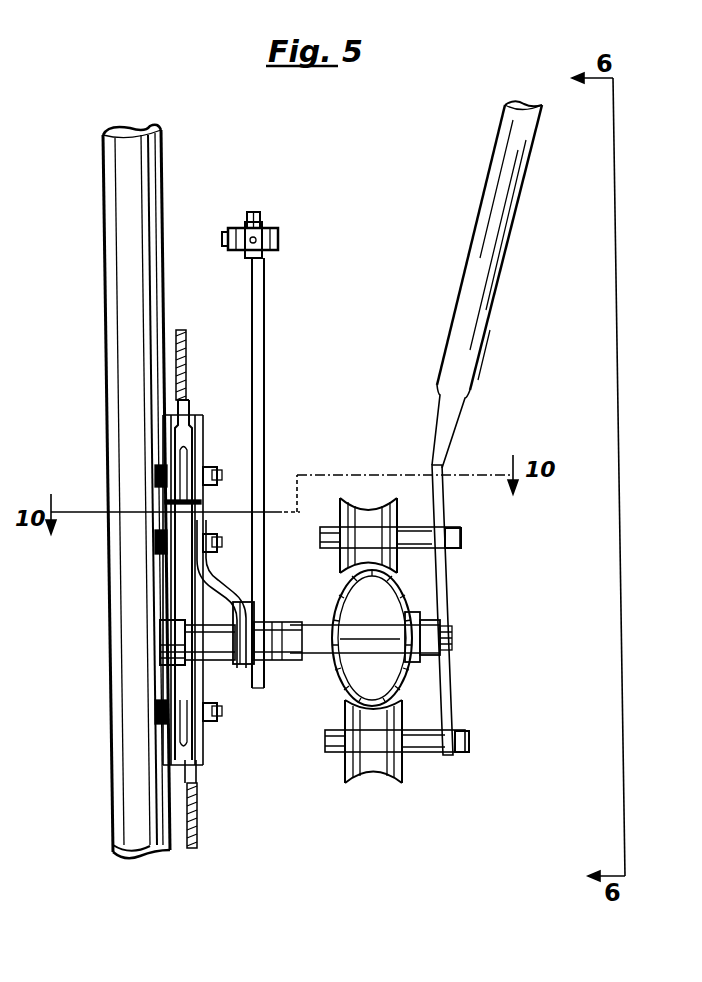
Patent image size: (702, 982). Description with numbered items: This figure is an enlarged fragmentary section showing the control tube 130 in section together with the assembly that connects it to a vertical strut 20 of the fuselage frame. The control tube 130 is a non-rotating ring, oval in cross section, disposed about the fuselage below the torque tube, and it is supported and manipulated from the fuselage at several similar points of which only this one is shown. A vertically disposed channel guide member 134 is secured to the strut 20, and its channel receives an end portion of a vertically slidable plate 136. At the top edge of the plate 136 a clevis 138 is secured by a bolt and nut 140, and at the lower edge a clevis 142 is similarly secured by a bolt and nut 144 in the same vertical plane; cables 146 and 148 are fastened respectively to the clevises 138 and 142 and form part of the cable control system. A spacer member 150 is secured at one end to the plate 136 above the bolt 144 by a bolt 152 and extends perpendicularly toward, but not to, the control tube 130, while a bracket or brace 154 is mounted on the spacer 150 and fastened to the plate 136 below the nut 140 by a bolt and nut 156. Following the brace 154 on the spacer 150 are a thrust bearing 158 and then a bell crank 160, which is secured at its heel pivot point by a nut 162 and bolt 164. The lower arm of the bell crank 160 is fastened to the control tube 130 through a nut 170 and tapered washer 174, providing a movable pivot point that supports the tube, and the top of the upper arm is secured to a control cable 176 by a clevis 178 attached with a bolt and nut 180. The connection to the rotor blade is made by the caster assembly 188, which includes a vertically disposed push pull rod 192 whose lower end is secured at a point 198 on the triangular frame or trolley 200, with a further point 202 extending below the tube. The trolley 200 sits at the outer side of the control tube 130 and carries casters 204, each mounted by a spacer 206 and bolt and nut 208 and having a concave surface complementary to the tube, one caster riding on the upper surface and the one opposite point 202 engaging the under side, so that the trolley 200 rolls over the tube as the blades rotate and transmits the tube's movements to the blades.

The strut 20 is at (112, 341).
The control tube 130 is at (333, 690).
The channel guide member 134 is at (197, 414).
The vertically slidable plate 136 is at (200, 520).
The clevis 138 is at (190, 392).
The bolt and nut 140 is at (208, 468).
The clevis 142 is at (197, 782).
The bolt and nut 144 is at (210, 719).
The cable 146 is at (187, 351).
The cable 148 is at (197, 848).
The spacer member 150 is at (215, 666).
The bolt 152 is at (160, 633).
The bracket or brace 154 is at (234, 593).
The bolt and nut 156 is at (210, 553).
The thrust bearing 158 is at (255, 604).
The bell crank 160 is at (265, 312).
The nut 162 is at (275, 663).
The bolt 164 is at (340, 660).
The nut 170 is at (430, 624).
The tapered washer 174 is at (420, 612).
The control cable 176 is at (255, 214).
The clevis 178 is at (262, 233).
The bolt and nut 180 is at (245, 248).
The caster assembly 188 is at (381, 498).
The push pull rod 192 is at (473, 226).
The attachment point 198 is at (455, 528).
The triangular frame or trolley 200 is at (450, 685).
The attachment point 202 is at (456, 756).
The caster 204 is at (340, 506).
The spacer 206 is at (420, 760).
The bolt and nut 208 is at (330, 534).